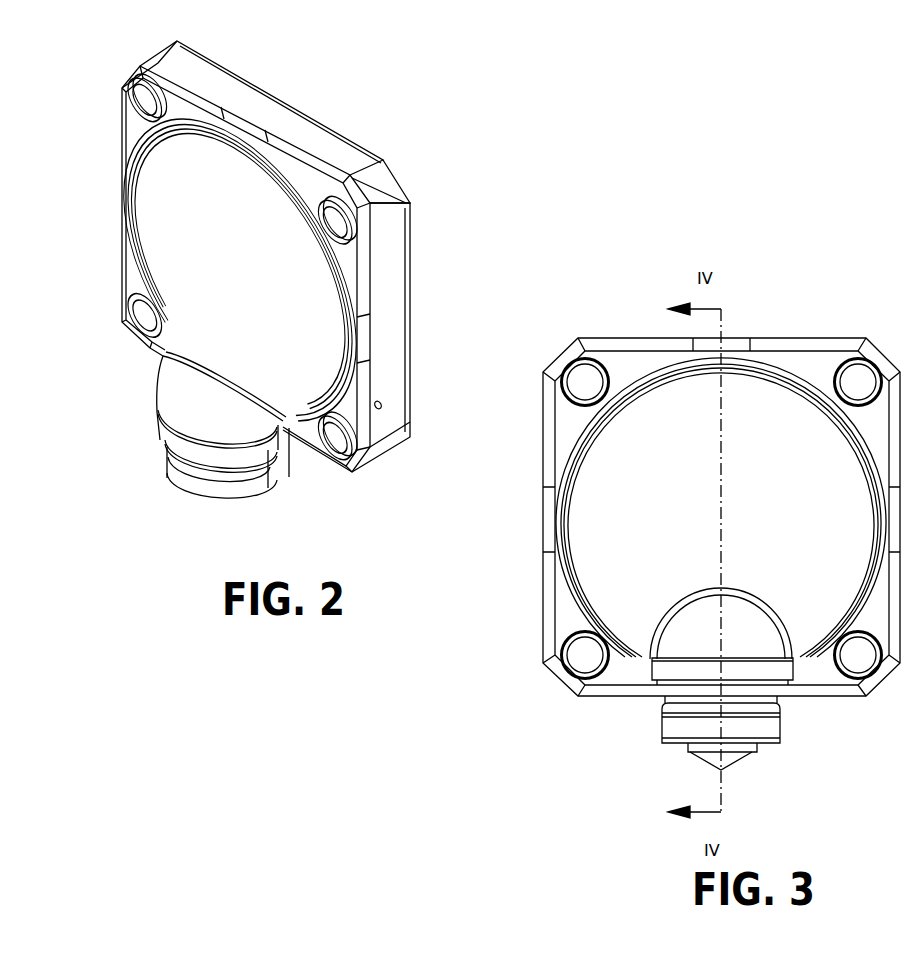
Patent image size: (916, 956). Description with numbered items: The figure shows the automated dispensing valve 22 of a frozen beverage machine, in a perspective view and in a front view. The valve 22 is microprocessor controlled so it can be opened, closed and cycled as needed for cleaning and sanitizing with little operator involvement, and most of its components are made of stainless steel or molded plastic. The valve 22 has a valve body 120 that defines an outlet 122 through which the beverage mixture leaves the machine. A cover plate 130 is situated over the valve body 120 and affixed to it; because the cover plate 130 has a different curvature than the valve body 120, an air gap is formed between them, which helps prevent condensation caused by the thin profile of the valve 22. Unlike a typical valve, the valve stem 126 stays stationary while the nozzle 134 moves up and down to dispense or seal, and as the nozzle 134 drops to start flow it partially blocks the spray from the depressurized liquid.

In FIG. 2, the dispensing valve 22 is at (328, 132).
In FIG. 3, the dispensing valve 22 is at (556, 600).
In FIG. 2, the valve body 120 is at (378, 381).
In FIG. 3, the valve body 120 is at (797, 673).
In FIG. 2, the outlet 122 is at (200, 495).
In FIG. 3, the outlet 122 is at (683, 752).
In FIG. 3, the valve stem 126 is at (728, 768).
In FIG. 2, the cover plate 130 is at (150, 226).
In FIG. 3, the cover plate 130 is at (587, 488).
In FIG. 3, the nozzle 134 is at (742, 749).